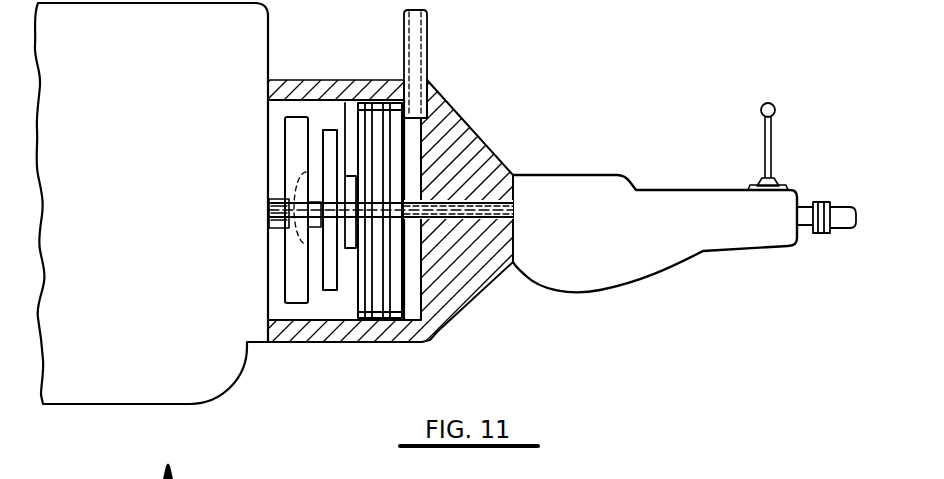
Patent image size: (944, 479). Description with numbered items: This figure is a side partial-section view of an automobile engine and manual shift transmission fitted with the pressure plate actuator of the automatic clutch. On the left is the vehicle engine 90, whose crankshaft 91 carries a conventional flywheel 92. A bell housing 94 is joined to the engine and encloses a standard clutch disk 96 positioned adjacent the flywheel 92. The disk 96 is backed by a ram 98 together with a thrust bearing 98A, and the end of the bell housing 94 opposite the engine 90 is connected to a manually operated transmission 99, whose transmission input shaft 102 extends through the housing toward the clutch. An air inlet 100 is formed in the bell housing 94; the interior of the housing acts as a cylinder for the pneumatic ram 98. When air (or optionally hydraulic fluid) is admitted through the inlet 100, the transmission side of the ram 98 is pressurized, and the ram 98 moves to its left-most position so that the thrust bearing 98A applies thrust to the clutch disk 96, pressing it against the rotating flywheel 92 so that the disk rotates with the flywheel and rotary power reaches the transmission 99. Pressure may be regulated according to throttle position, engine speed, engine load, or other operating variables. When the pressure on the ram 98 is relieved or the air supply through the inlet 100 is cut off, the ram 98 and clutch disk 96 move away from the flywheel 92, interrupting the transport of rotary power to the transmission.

The vehicle engine 90 is at (148, 156).
The crankshaft 91 is at (268, 201).
The flywheel 92 is at (278, 267).
The bell housing 94 is at (493, 131).
The clutch disk 96 is at (335, 303).
The ram 98 is at (408, 273).
The thrust bearing 98A is at (347, 170).
The manually operated transmission 99 is at (665, 180).
The air inlet 100 is at (432, 49).
The transmission input shaft 102 is at (470, 212).